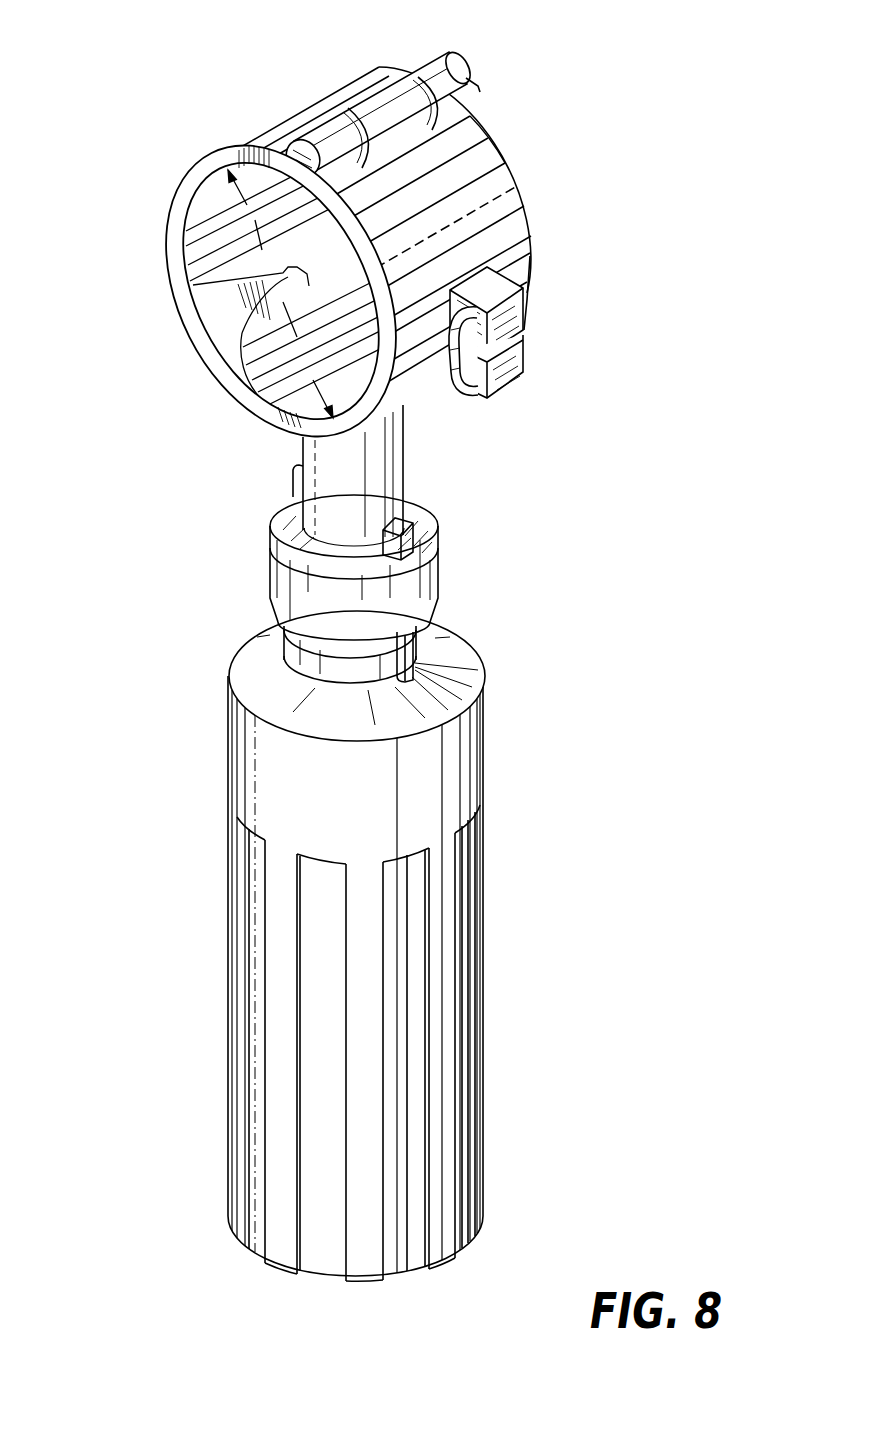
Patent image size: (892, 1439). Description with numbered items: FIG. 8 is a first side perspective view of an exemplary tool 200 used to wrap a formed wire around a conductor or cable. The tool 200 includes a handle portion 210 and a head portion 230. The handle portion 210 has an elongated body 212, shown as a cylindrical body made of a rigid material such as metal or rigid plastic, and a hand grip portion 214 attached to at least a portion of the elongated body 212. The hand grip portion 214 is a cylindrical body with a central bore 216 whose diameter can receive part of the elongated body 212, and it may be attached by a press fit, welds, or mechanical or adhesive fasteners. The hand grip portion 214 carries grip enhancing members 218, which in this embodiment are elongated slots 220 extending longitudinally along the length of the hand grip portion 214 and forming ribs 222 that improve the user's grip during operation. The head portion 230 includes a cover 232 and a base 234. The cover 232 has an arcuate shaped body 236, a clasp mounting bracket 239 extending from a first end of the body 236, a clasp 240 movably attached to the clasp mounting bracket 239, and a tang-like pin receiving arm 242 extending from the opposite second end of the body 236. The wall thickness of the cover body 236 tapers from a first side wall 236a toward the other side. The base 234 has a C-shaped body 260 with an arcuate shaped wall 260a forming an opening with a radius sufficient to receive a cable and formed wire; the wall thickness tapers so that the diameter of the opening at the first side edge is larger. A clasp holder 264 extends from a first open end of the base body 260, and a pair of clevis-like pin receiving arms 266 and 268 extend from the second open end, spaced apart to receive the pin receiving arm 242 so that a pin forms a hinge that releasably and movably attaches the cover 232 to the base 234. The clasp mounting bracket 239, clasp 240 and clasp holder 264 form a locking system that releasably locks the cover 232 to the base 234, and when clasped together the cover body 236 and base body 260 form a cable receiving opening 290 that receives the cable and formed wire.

The tool 200 is at (602, 96).
The handle portion 210 is at (678, 448).
The elongated body 212 is at (405, 442).
The hand grip portion 214 is at (489, 782).
The central bore 216 is at (295, 505).
The grip enhancing members 218 is at (222, 1145).
The elongated slots 220 is at (252, 1240).
The ribs 222 is at (280, 1263).
The head portion 230 is at (680, 423).
The cover 232 is at (500, 104).
The base 234 is at (179, 360).
The arcuate shaped body 236 is at (503, 201).
The first side wall 236a is at (497, 159).
The clasp mounting bracket 239 is at (490, 266).
The clasp 240 is at (527, 346).
The pin receiving arm 242 is at (358, 103).
The C-shaped body 260 is at (205, 158).
The arcuate shaped wall 260a is at (176, 198).
The clasp holder 264 is at (510, 380).
The first pin receiving arm 266 is at (313, 130).
The second pin receiving arm 268 is at (428, 62).
The cable receiving opening 290 is at (205, 267).